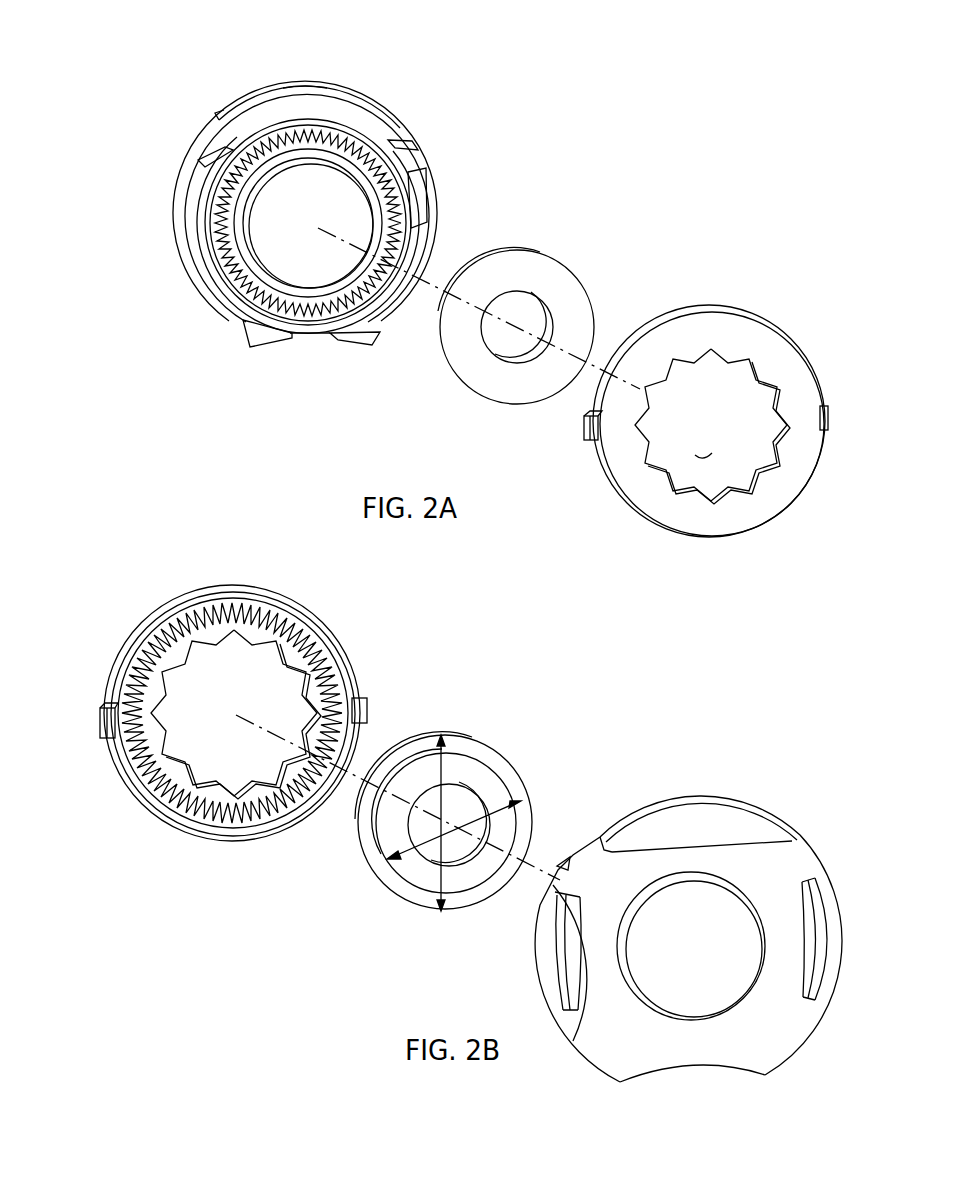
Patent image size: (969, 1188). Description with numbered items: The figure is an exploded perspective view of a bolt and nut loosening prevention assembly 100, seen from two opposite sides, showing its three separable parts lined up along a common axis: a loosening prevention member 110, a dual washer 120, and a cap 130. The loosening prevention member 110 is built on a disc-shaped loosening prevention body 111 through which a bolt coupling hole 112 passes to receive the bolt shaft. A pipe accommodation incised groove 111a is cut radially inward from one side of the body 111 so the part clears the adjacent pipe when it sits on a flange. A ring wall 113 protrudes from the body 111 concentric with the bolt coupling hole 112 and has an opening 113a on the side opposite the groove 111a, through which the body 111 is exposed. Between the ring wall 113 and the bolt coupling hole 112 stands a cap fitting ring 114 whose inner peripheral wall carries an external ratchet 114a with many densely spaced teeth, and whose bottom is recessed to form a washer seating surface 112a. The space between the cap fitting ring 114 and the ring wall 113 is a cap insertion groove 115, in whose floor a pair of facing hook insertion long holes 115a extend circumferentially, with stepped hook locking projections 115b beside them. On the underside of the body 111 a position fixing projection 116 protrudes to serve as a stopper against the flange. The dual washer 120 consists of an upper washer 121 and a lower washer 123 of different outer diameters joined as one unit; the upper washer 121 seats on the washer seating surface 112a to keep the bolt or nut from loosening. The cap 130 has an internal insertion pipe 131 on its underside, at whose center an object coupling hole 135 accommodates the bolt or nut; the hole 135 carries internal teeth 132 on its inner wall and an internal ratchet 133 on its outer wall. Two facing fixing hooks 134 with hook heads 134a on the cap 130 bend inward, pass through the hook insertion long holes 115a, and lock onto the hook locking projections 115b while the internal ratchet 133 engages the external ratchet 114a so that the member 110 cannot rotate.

In FIG. 2A, the bolt and nut loosening prevention assembly 100 is at (675, 145).
In FIG. 2A, the loosening prevention member 110 is at (418, 86).
In FIG. 2B, the loosening prevention member 110 is at (570, 1097).
In FIG. 2A, the loosening prevention body 111 is at (238, 137).
In FIG. 2A, the pipe accommodation incised groove 111a is at (323, 333).
In FIG. 2B, the pipe accommodation incised groove 111a is at (700, 1072).
In FIG. 2A, the bolt coupling hole 112 is at (328, 245).
In FIG. 2B, the bolt coupling hole 112 is at (757, 1040).
In FIG. 2A, the washer seating surface 112a is at (323, 133).
In FIG. 2A, the ring wall 113 is at (220, 310).
In FIG. 2A, the opening 113a is at (291, 110).
In FIG. 2A, the cap fitting ring 114 is at (220, 240).
In FIG. 2A, the external ratchet 114a is at (227, 260).
In FIG. 2A, the cap insertion groove 115 is at (250, 317).
In FIG. 2B, the hook insertion long holes 115a is at (817, 917).
In FIG. 2B, the hook locking projections 115b is at (820, 967).
In FIG. 2A, the position fixing projection 116 is at (250, 97).
In FIG. 2B, the position fixing projection 116 is at (700, 822).
In FIG. 2A, the dual washer 120 is at (523, 262).
In FIG. 2B, the dual washer 120 is at (578, 722).
In FIG. 2B, the upper washer 121 is at (482, 748).
In FIG. 2B, the lower washer 123 is at (502, 792).
In FIG. 2A, the cap 130 is at (757, 345).
In FIG. 2B, the cap 130 is at (132, 762).
In FIG. 2B, the internal insertion pipe 131 is at (220, 800).
In FIG. 2A, the internal teeth 132 is at (770, 470).
In FIG. 2B, the internal teeth 132 is at (225, 635).
In FIG. 2B, the internal ratchet 133 is at (178, 807).
In FIG. 2A, the fixing hooks 134 is at (598, 455).
In FIG. 2B, the fixing hooks 134 is at (100, 708).
In FIG. 2A, the hook heads 134a is at (585, 432).
In FIG. 2B, the hook heads 134a is at (100, 727).
In FIG. 2A, the object coupling hole 135 is at (703, 462).